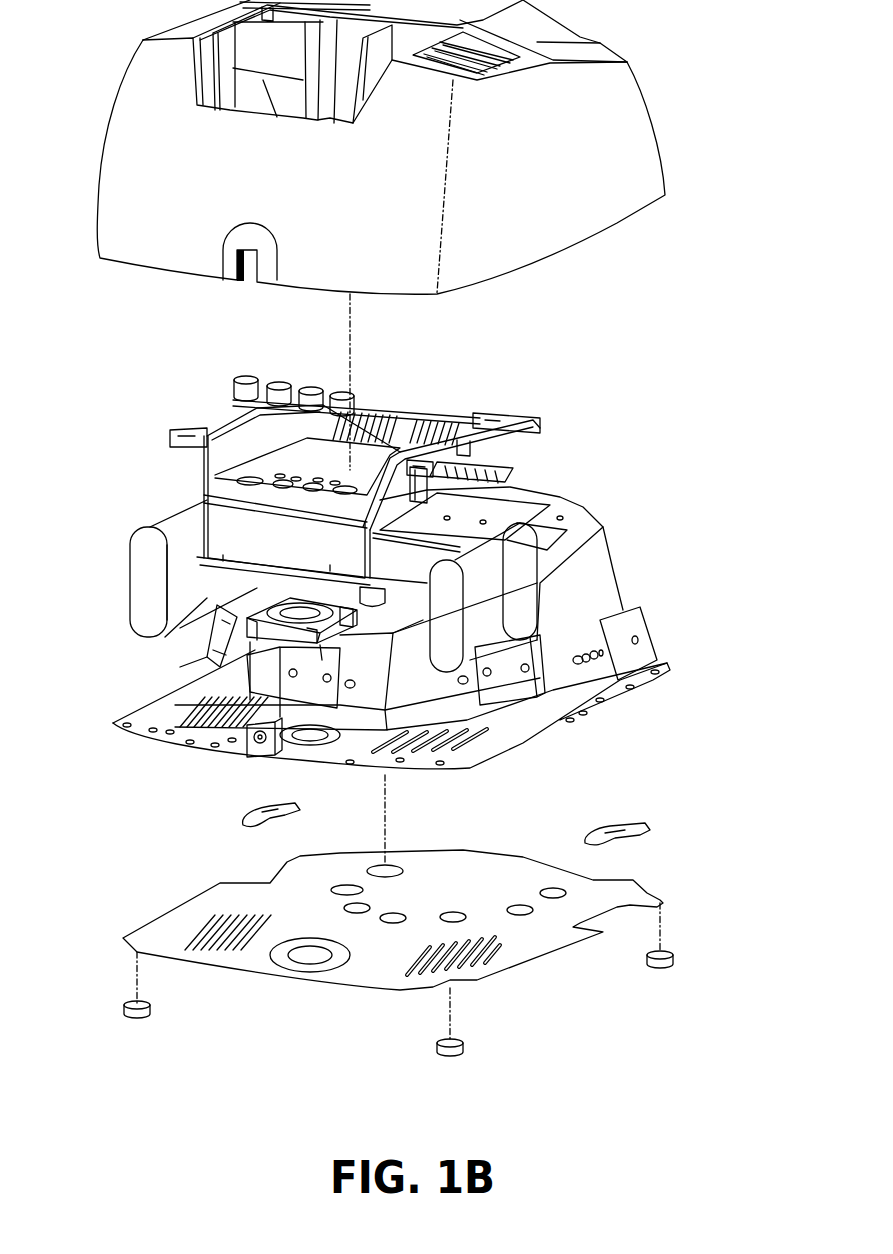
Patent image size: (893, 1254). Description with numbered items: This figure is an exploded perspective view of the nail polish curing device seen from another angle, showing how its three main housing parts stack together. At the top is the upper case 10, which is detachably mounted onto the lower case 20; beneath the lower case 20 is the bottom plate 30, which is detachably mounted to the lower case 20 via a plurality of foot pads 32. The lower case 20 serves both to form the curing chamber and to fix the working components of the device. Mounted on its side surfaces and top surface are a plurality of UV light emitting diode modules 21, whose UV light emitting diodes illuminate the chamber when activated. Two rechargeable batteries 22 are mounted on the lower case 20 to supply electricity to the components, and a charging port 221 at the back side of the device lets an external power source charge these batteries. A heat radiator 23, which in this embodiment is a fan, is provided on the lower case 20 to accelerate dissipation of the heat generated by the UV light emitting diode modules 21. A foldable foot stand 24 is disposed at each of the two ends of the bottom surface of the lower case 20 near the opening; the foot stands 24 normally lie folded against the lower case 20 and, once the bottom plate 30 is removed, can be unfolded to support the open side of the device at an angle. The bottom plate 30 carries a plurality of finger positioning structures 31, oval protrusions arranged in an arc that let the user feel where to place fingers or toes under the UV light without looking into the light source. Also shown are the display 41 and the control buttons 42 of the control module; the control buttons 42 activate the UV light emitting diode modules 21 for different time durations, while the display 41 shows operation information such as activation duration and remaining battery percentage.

The upper case 10 is at (638, 132).
The lower case 20 is at (610, 573).
The UV light emitting diode module 21 is at (648, 633).
The rechargeable battery 22 is at (135, 594).
The heat radiator 23 is at (205, 660).
The foldable foot stand 24 is at (245, 825).
The bottom plate 30 is at (530, 950).
The finger positioning structure 31 is at (385, 868).
The foot pad 32 is at (128, 1012).
The display 41 is at (277, 463).
The control button 42 is at (235, 386).
The charging port 221 is at (250, 745).